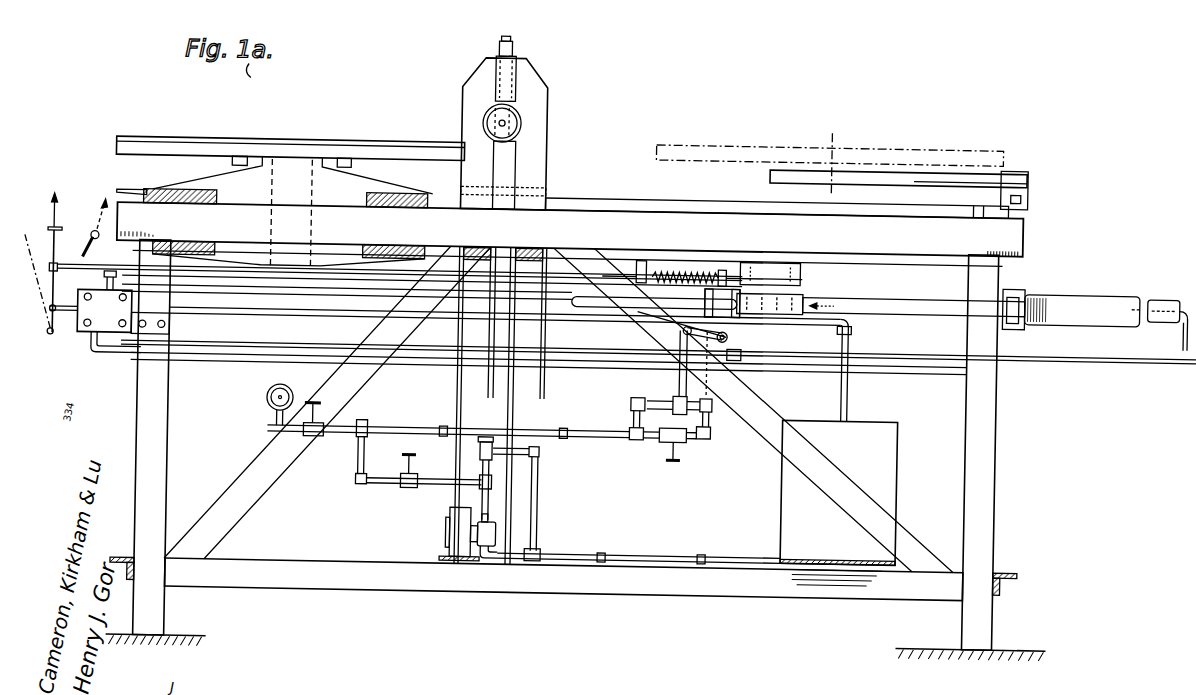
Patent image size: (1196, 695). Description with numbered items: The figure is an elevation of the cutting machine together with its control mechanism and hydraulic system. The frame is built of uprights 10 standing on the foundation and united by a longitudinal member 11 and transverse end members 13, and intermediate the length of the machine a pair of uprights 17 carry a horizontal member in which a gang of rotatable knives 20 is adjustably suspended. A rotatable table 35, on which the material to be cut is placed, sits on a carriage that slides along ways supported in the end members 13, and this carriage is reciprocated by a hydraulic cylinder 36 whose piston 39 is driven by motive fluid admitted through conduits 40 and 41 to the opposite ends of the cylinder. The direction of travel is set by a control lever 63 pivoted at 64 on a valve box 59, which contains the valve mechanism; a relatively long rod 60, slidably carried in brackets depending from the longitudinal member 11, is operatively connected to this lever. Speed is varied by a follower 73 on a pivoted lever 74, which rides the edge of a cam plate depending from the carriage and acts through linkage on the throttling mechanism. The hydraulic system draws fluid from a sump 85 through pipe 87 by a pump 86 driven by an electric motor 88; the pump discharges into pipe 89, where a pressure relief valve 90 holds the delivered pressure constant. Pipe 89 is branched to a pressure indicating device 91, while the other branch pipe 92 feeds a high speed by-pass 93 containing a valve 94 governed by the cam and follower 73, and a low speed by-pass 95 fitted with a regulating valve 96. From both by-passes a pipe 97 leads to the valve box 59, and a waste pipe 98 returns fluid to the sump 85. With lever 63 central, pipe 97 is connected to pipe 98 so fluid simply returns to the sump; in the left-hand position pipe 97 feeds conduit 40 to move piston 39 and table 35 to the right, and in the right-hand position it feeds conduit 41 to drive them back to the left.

The uprights 10 is at (161, 474).
The longitudinal member 11 is at (690, 199).
The transverse member 13 is at (118, 200).
The uprights 17 is at (535, 180).
The rotatable knives 20 is at (517, 125).
The rotatable table 35 is at (172, 151).
The hydraulic cylinder 36 is at (1064, 291).
The piston 39 is at (795, 295).
The conduit 40 is at (421, 368).
The conduit 41 is at (425, 342).
The valve box 59 is at (109, 333).
The rod 60 is at (80, 281).
The control lever 63 is at (56, 253).
The pivot 64 is at (47, 345).
The follower 73 is at (742, 354).
The pivoted lever 74 is at (665, 318).
The sump 85 is at (893, 485).
The pump 86 is at (491, 535).
The pipe 87 is at (650, 554).
The electric motor 88 is at (452, 523).
The pipe 89 is at (411, 476).
The pressure relief valve 90 is at (522, 431).
The pressure indicating device 91 is at (266, 404).
The branch pipe 92 is at (498, 446).
The high speed by-pass 93 is at (652, 394).
The valve 94 is at (709, 433).
The low speed by-pass 95 is at (650, 439).
The regulating valve 96 is at (688, 442).
The pipe 97 is at (433, 255).
The waste pipe 98 is at (850, 318).